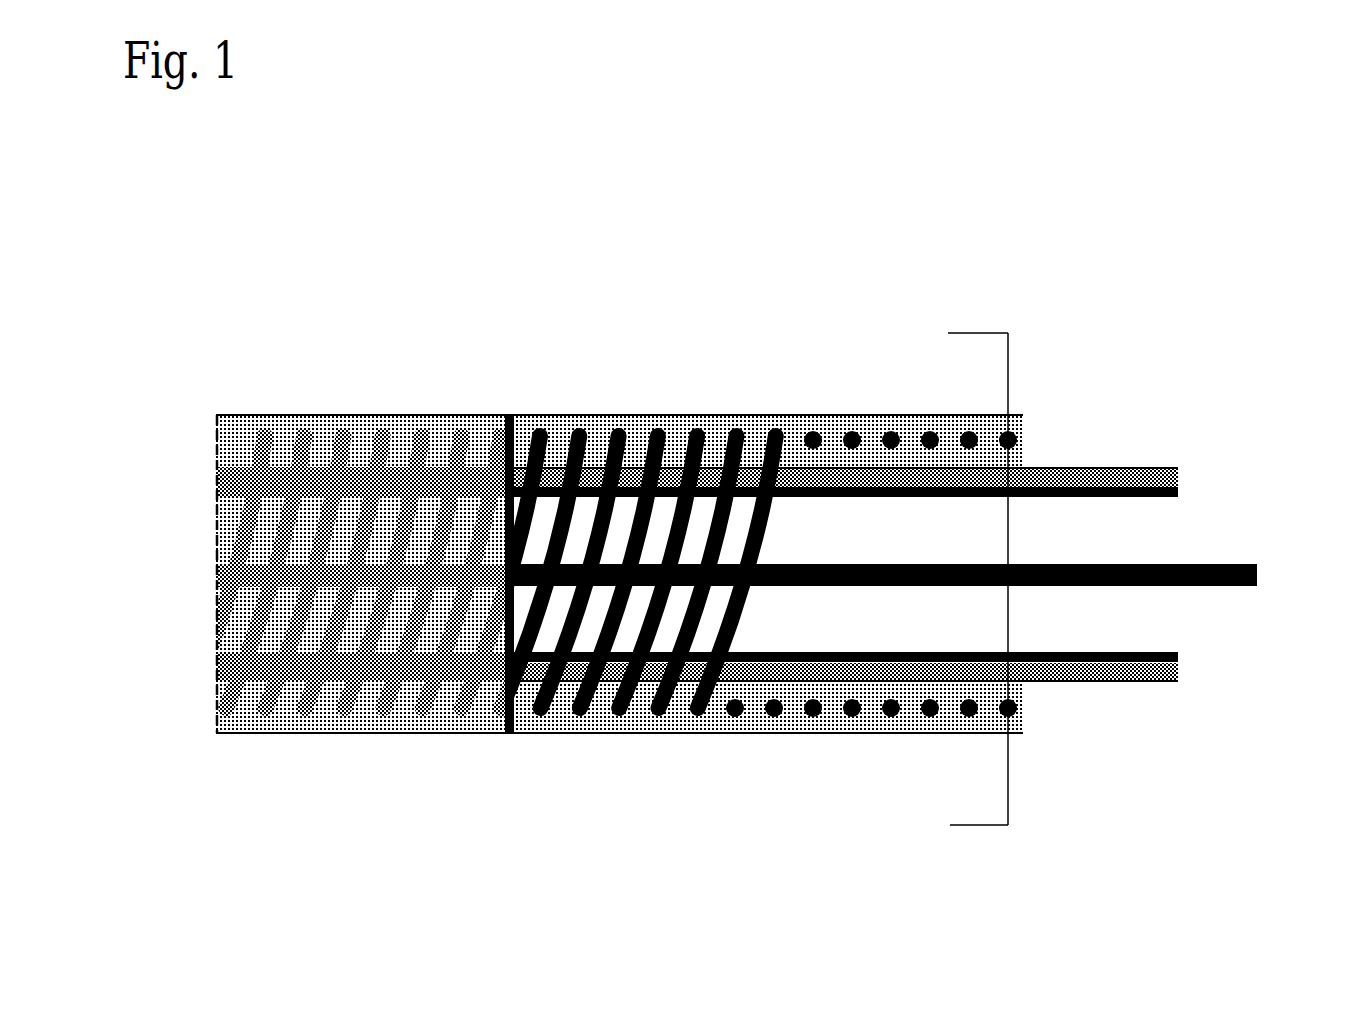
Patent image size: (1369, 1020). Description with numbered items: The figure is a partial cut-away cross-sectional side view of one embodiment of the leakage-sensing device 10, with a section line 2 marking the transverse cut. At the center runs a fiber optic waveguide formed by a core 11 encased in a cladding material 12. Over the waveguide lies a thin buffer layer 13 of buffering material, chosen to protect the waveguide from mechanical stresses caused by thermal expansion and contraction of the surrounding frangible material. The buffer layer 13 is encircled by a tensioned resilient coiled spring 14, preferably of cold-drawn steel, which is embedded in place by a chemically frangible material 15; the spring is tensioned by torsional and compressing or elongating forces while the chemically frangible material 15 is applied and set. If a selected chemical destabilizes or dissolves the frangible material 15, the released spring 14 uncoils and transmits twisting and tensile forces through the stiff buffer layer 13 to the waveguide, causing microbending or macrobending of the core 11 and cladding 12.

The leakage-sensing device 10 is at (762, 546).
The core 11 is at (1232, 588).
The cladding material 12 is at (1160, 526).
The buffer layer 13 is at (1149, 692).
The resilient coiled spring 14 is at (695, 432).
The chemically frangible material 15 is at (396, 737).
The section line 2- 2 is at (965, 578).